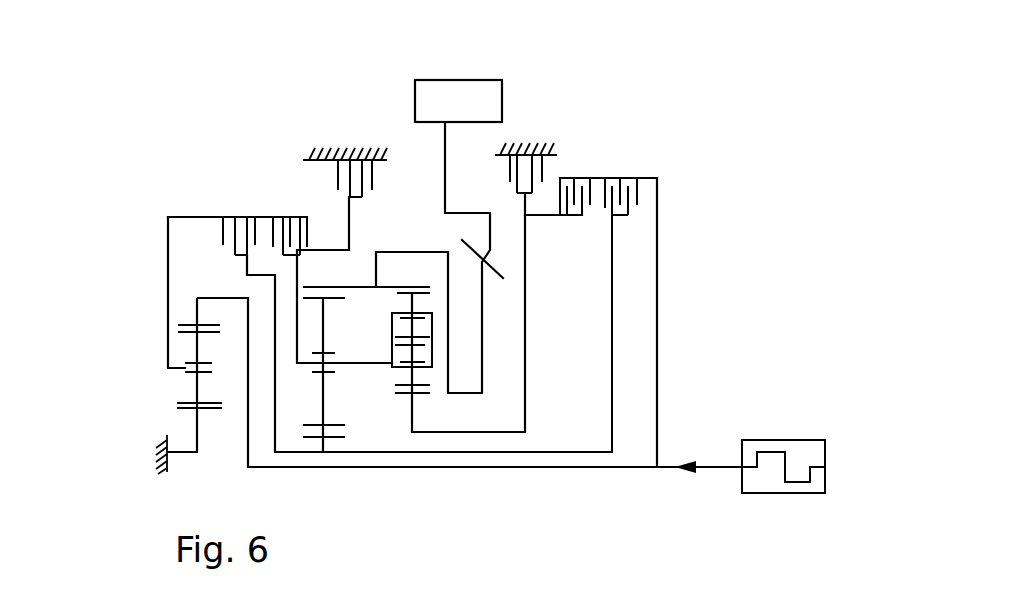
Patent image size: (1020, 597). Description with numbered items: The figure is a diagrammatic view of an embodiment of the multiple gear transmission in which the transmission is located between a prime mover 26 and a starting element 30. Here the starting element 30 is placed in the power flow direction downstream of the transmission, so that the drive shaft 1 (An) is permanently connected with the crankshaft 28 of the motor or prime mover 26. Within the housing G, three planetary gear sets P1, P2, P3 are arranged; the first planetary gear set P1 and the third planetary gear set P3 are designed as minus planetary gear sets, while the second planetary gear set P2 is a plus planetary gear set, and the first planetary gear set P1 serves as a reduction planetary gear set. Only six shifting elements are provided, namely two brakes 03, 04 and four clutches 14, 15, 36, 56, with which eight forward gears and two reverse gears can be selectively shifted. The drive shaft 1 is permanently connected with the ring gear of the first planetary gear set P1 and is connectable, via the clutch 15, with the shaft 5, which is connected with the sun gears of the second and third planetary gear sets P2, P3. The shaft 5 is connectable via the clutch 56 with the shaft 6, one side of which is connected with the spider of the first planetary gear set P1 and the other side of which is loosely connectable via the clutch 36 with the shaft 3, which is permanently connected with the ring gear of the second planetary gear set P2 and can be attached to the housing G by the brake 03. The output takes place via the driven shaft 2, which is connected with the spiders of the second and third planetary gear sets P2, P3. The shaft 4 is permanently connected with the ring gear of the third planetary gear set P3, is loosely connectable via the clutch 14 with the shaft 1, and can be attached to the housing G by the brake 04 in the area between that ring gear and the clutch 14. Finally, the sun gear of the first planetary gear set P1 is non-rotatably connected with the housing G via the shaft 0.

The starting element 30 is at (477, 80).
The first brake 03 is at (339, 178).
The second brake 04 is at (512, 174).
The fourth clutch 56 is at (239, 226).
The third clutch 36 is at (290, 226).
The first clutch 14 is at (575, 186).
The second clutch 15 is at (622, 305).
The drive shaft 1 is at (199, 317).
The sixth shaft 6 is at (206, 365).
The shaft 0 is at (199, 418).
The driven shaft 2 is at (367, 280).
The third shaft 3 is at (379, 342).
The fourth shaft 4 is at (412, 401).
The fifth shaft 5 is at (324, 442).
The prime mover 26 is at (765, 493).
The crankshaft 28 is at (800, 493).
The first planetary gear set P1 is at (160, 393).
The second planetary gear set P2 is at (356, 415).
The third planetary gear set P3 is at (450, 416).
The housing G is at (345, 147).
The drive shaft An is at (719, 444).